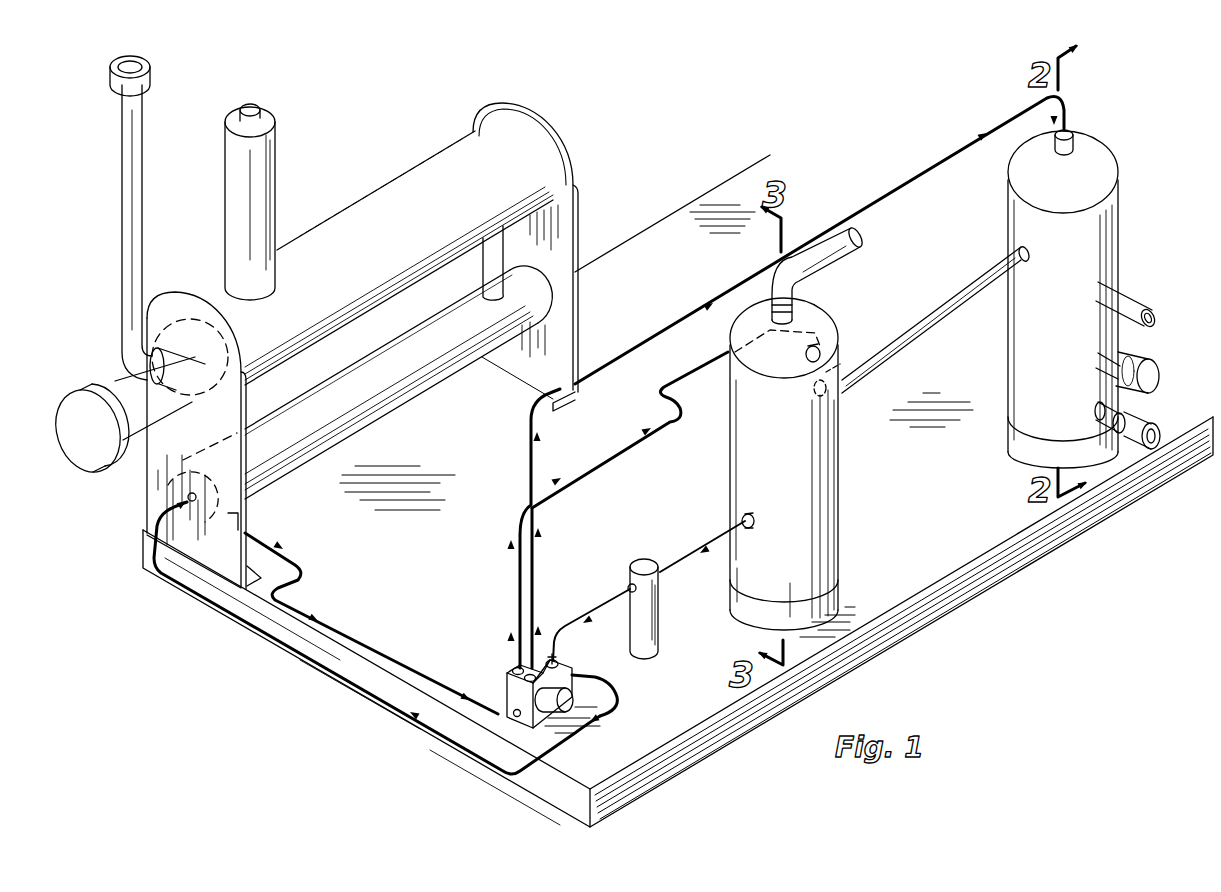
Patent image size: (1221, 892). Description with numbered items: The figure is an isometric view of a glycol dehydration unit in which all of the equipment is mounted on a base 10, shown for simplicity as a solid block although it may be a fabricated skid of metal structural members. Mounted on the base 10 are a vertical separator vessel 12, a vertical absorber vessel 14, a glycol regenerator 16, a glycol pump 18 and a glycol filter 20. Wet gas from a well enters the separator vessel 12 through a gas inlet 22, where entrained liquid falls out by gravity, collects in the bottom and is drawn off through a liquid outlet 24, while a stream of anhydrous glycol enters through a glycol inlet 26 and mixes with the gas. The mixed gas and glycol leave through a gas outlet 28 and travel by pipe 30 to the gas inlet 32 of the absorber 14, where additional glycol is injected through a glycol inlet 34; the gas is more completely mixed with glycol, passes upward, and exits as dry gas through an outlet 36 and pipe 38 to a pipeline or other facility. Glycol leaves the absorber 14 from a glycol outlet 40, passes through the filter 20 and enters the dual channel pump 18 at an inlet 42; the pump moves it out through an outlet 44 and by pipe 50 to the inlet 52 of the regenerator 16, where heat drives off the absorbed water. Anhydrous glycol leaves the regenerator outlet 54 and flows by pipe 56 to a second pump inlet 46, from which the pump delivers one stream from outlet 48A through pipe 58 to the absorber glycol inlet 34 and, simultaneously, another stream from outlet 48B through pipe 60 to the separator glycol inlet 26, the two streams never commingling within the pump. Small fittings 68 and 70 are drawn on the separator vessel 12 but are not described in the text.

The base 10 is at (548, 778).
The vertical separator vessel 12 is at (1096, 165).
The vertical absorber vessel 14 is at (730, 467).
The glycol regenerator 16 is at (371, 185).
The glycol pump 18 is at (506, 690).
The glycol filter 20 is at (657, 614).
The gas inlet 22 is at (1118, 284).
The liquid outlet 24 is at (1098, 407).
The glycol inlet 26 is at (1072, 133).
The gas outlet 28 is at (1004, 258).
The pipe 30 is at (920, 318).
The gas inlet 32 is at (832, 392).
The glycol inlet 34 is at (828, 346).
The outlet 36 is at (736, 318).
The pipe 38 is at (835, 246).
The glycol outlet 40 is at (740, 514).
The inlet 42 is at (557, 662).
The outlet 44 is at (580, 677).
The inlet 46 is at (545, 712).
The outlet 48A is at (514, 667).
The outlet 48B is at (543, 652).
The pipe 50 is at (372, 705).
The inlet 52 is at (187, 496).
The regenerator outlet 54 is at (240, 513).
The pipe 56 is at (372, 650).
The pipe 58 is at (596, 468).
The pipe 60 is at (690, 312).
The valve fitting 68 is at (1155, 362).
The valve fitting 70 is at (1140, 420).